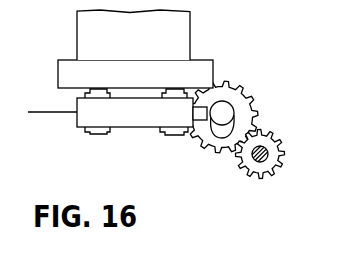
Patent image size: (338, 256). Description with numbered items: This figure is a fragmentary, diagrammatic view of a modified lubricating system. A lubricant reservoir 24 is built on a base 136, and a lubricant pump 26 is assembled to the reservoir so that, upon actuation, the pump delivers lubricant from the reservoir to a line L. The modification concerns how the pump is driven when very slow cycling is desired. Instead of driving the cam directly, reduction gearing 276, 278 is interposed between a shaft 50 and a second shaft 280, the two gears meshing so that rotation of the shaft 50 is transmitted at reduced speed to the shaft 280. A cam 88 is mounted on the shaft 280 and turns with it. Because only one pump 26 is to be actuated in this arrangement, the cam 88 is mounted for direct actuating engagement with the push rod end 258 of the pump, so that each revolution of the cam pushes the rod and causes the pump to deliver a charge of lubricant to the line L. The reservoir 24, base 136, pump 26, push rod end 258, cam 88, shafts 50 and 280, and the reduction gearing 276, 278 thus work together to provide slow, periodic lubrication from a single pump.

The lubricant reservoir 24 is at (183, 33).
The base 136 is at (103, 70).
The lubricant pump 26 is at (128, 125).
The outer end portion of the push rod 258 is at (195, 130).
The shaft 280 is at (222, 112).
The reduction gearing 278 is at (247, 90).
The reduction gearing 276 is at (296, 194).
The cam 88 is at (207, 138).
The shaft 50 is at (250, 170).
The line L is at (44, 112).